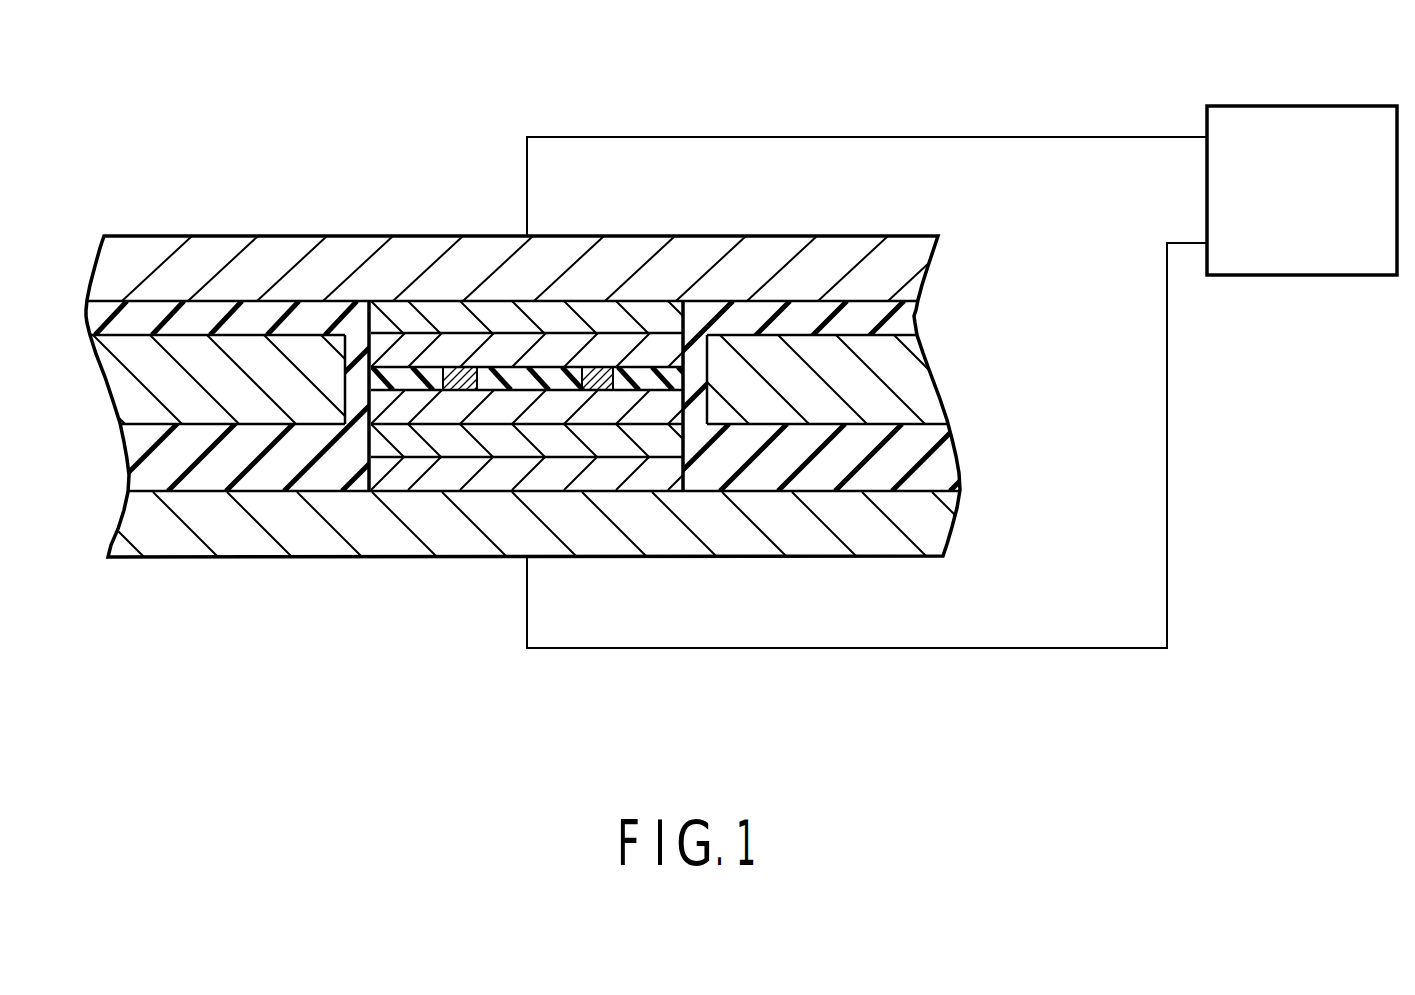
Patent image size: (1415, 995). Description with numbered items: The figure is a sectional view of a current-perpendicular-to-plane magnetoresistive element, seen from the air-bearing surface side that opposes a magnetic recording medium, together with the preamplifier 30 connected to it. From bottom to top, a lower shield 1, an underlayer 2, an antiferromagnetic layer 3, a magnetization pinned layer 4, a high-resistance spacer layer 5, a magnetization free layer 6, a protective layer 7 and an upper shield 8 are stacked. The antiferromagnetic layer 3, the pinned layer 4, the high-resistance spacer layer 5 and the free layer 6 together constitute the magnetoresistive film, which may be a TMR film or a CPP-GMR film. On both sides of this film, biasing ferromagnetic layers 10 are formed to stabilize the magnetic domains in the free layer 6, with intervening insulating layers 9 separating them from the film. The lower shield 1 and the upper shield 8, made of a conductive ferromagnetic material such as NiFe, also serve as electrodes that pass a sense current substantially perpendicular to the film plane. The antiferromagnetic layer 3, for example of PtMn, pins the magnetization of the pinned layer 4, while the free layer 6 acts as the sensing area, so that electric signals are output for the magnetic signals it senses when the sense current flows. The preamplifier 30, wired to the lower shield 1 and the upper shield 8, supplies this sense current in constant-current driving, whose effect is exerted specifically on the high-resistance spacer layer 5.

The lower shield 1 is at (173, 543).
The underlayer 2 is at (615, 472).
The antiferromagnetic layer 3 is at (457, 443).
The magnetization pinned layer 4 is at (393, 412).
The high-resistance spacer layer 5 is at (553, 375).
The magnetization free layer 6 is at (490, 343).
The protective layer 7 is at (427, 312).
The upper shield 8 is at (213, 252).
The insulating layer 9 is at (93, 315).
The biasing ferromagnetic layer 10 is at (107, 385).
The preamplifier 30 is at (1305, 105).